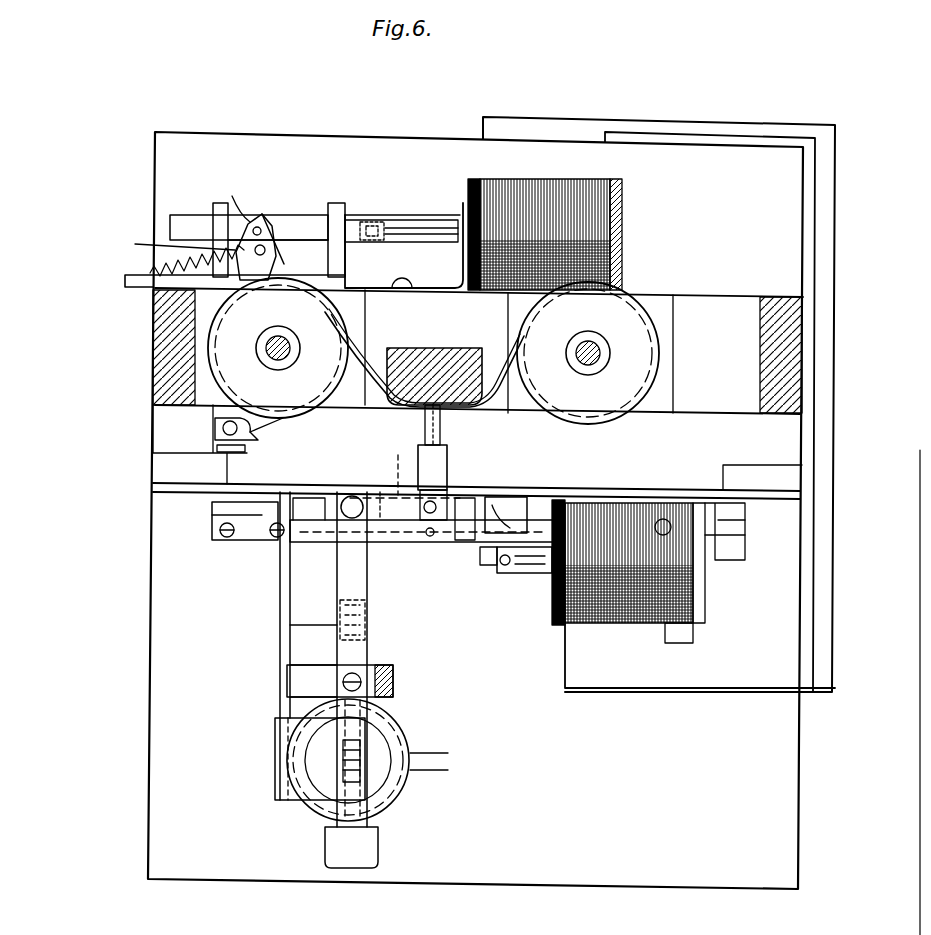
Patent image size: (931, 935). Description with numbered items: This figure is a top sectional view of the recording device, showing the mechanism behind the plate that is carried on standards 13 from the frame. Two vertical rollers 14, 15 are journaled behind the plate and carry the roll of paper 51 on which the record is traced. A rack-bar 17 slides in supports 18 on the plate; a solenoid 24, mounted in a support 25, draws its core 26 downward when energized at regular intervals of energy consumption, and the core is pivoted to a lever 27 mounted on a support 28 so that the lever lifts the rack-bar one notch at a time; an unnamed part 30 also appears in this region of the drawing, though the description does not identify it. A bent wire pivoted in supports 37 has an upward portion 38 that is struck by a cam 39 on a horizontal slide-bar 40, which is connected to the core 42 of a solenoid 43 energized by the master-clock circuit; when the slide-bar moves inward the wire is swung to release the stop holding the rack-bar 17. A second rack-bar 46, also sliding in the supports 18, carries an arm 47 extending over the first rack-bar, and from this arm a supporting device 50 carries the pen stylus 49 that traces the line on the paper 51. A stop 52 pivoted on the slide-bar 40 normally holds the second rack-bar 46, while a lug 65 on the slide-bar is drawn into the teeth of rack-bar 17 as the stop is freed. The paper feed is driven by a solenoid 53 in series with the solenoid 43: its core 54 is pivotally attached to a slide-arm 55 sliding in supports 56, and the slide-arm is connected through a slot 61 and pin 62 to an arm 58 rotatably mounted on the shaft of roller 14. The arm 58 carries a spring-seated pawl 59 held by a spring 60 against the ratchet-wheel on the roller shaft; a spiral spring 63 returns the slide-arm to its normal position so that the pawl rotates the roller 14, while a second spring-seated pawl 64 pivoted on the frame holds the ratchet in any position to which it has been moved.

The standards 13 is at (160, 353).
The vertical roller 14 is at (272, 396).
The vertical roller 15 is at (618, 398).
The rack-bar 17 is at (352, 520).
The supports 18 is at (400, 462).
The solenoid 24 is at (398, 802).
The support 25 is at (275, 790).
The core 26 is at (343, 778).
The lever 27 is at (357, 745).
The support 28 is at (366, 626).
The screw 30 is at (362, 680).
The supports 37 is at (280, 530).
The portion of wire 38 is at (255, 535).
The cam 39 is at (262, 519).
The slide-bar 40 is at (386, 544).
The core 42 is at (532, 575).
The solenoid 43 is at (642, 518).
The second rack-bar 46 is at (442, 503).
The arm 47 is at (378, 492).
The pen stylus 49 is at (441, 425).
The supporting device 50 is at (447, 475).
The roll of paper 51 is at (500, 372).
The stop 52 is at (432, 545).
The solenoid 53 is at (576, 235).
The core 54 is at (425, 235).
The slide-arm 55 is at (316, 240).
The supports 56 is at (213, 215).
The arm 58 is at (285, 250).
The spring-seated pawl 59 is at (244, 288).
The spring 60 is at (168, 236).
The slot 61 is at (247, 218).
The pin 62 is at (265, 224).
The spiral spring 63 is at (150, 268).
The spring-seated pawl 64 is at (244, 447).
The lug 65 is at (342, 497).